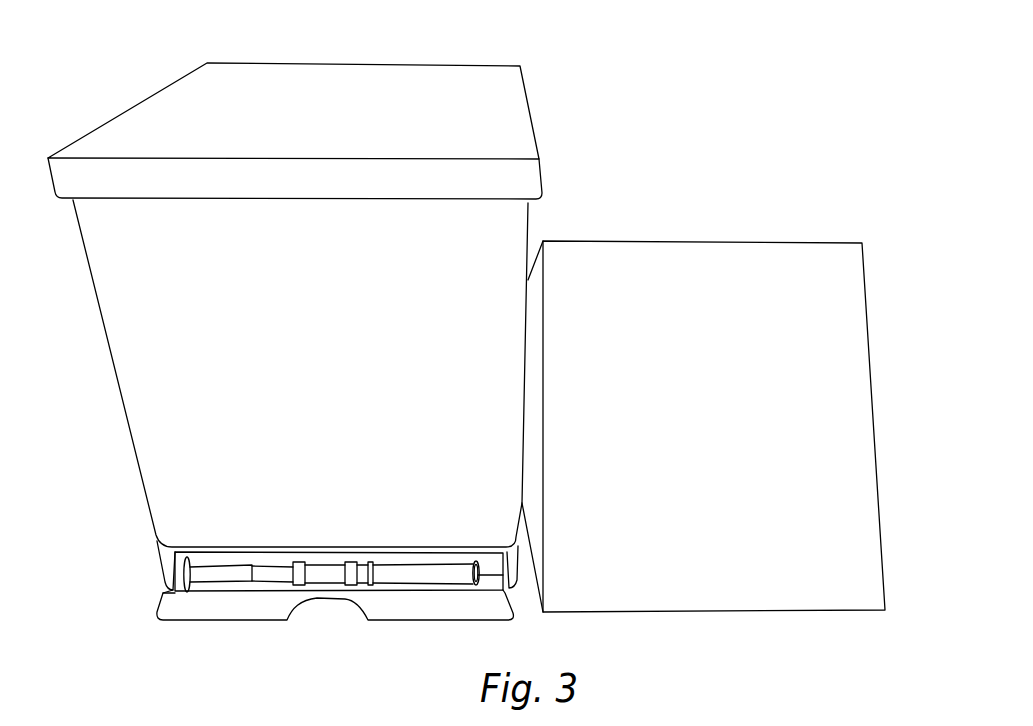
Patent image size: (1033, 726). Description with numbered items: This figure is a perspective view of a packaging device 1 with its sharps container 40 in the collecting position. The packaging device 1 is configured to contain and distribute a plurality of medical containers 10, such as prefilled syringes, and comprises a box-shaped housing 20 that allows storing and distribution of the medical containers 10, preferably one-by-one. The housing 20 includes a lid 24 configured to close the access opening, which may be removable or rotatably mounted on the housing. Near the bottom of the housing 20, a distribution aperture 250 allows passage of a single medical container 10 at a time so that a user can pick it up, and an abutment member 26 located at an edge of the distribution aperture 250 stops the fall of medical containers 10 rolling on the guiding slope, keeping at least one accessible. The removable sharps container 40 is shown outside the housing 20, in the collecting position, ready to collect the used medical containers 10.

The packaging device 1 is at (660, 132).
The medical container 10 is at (243, 572).
The housing 20 is at (140, 333).
The lid 24 is at (323, 88).
The abutment member 26 is at (452, 605).
The sharps container 40 is at (835, 360).
The distribution aperture 250 is at (177, 556).